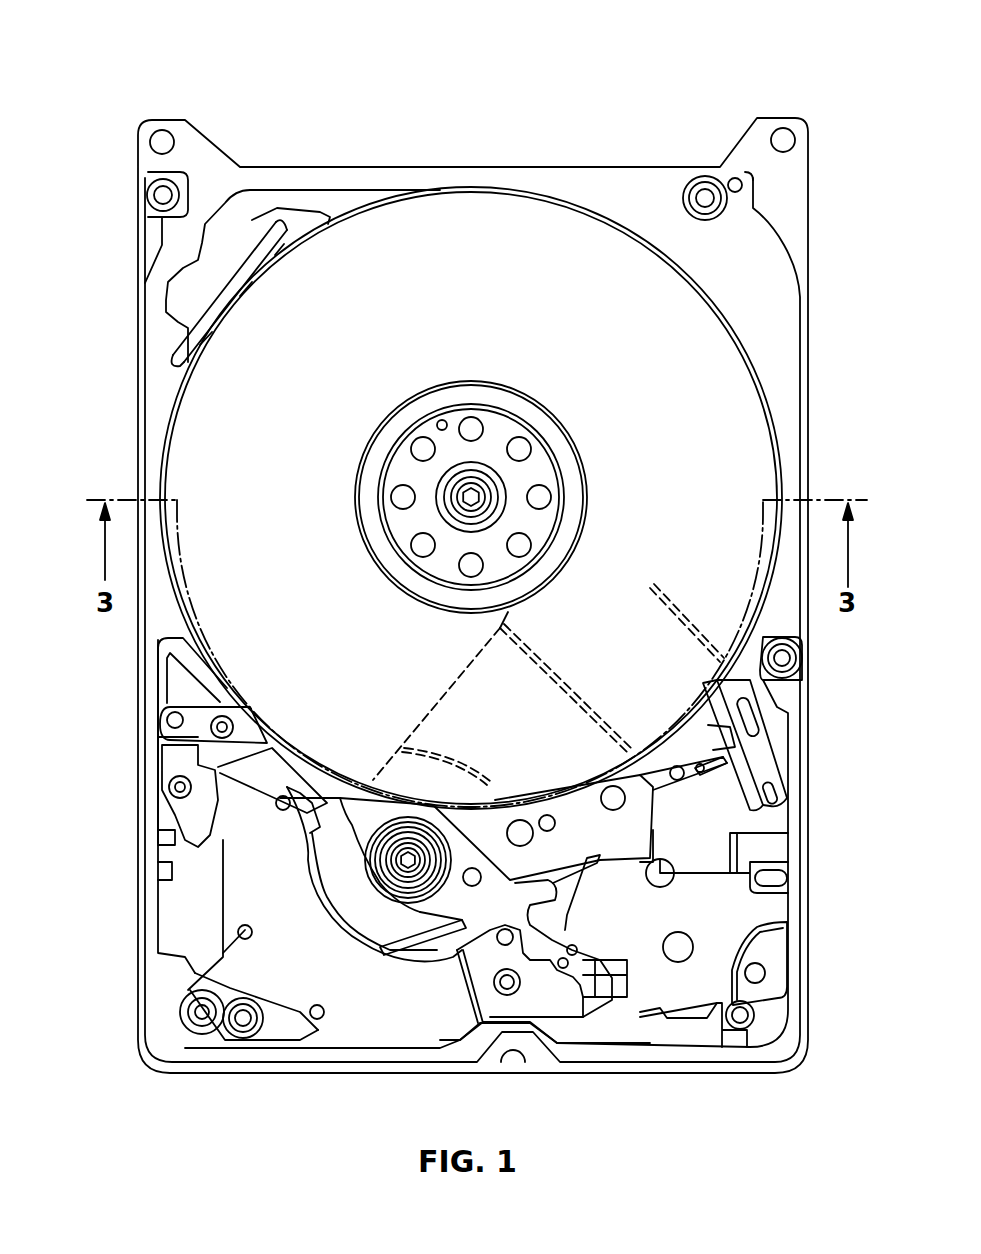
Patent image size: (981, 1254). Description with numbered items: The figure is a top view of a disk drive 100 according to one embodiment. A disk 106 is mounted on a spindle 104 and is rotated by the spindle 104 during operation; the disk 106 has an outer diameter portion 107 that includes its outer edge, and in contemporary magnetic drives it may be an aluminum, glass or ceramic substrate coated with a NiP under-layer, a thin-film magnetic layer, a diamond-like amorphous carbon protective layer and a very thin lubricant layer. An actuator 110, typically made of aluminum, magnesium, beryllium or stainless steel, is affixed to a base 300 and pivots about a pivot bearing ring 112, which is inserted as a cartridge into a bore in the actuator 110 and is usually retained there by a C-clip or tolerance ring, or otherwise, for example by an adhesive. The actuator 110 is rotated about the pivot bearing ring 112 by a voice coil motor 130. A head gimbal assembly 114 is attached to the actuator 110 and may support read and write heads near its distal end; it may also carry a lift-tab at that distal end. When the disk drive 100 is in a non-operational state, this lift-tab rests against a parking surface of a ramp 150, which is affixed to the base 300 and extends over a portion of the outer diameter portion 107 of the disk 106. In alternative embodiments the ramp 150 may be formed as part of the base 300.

The disk drive 100 is at (295, 130).
The base 300 is at (773, 363).
The outer diameter portion 107 is at (180, 392).
The spindle 104 is at (497, 438).
The disk 106 is at (580, 540).
The pivot bearing ring 112 is at (393, 843).
The actuator 110 is at (495, 822).
The head gimbal assembly 114 is at (682, 790).
The ramp 150 is at (710, 707).
The voice coil motor 130 is at (280, 890).